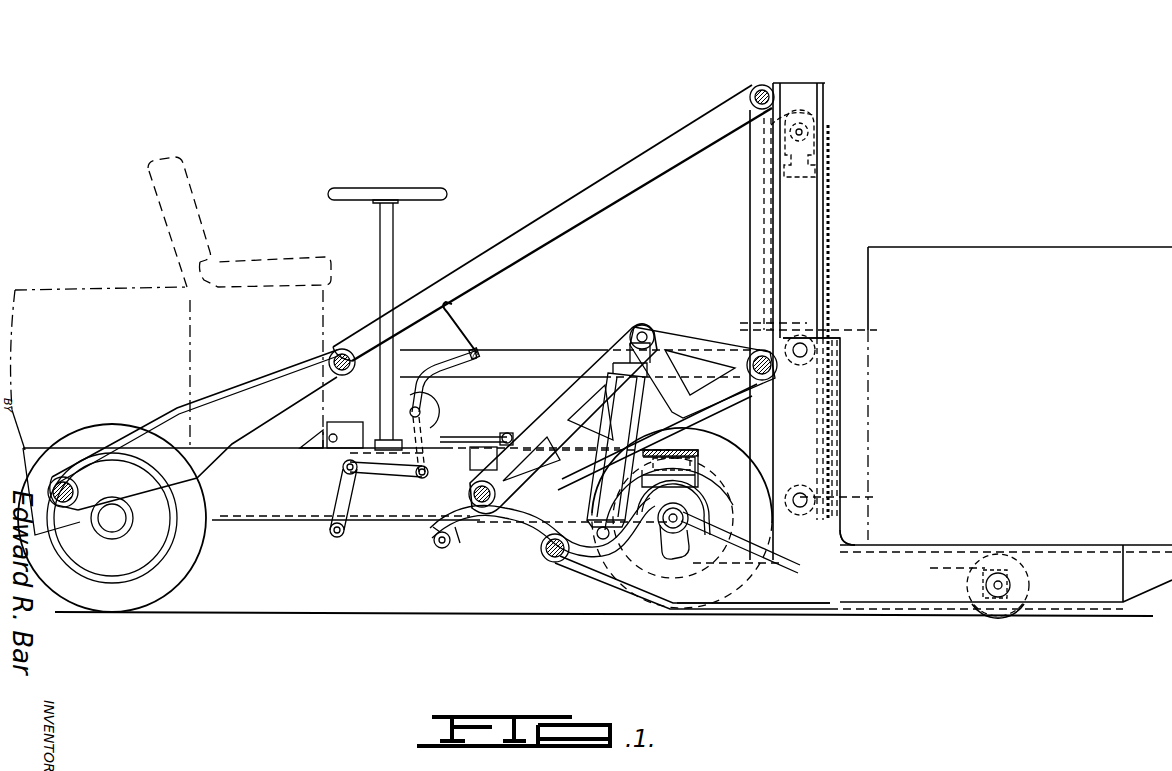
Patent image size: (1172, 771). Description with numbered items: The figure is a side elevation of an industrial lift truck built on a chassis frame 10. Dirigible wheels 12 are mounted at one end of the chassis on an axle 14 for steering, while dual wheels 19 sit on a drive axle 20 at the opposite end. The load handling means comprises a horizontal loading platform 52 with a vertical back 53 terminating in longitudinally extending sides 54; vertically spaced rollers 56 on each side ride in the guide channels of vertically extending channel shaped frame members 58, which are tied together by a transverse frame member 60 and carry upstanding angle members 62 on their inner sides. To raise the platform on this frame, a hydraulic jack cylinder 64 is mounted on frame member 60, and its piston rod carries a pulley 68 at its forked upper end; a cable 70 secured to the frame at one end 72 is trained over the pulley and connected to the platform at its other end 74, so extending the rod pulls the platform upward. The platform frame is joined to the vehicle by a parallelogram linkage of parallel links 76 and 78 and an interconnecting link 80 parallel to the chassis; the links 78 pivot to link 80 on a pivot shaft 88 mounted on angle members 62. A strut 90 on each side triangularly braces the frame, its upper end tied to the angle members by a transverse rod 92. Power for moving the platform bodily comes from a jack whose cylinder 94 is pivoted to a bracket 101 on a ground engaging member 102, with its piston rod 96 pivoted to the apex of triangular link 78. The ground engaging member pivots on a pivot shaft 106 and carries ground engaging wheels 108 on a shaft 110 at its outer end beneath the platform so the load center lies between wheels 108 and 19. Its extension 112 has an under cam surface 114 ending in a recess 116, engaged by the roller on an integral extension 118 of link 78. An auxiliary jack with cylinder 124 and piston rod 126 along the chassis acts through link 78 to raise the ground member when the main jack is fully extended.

The chassis frame 10 is at (257, 527).
The dirigible wheels 12 is at (180, 570).
The axle 14 is at (118, 525).
The dual wheels 19 is at (640, 604).
The drive axle 20 is at (690, 514).
The loading platform 52 is at (970, 546).
The vertical back 53 is at (840, 482).
The sides 54 is at (838, 445).
The rollers 56 is at (808, 342).
The channel shaped frame members 58 is at (800, 90).
The transverse frame member 60 is at (832, 335).
The upstanding angle members 62 is at (752, 213).
The cylinder 64 is at (815, 192).
The pulley 68 is at (816, 120).
The cable 70 is at (836, 216).
The cable end connection 72 is at (745, 330).
The cable end connection 74 is at (906, 546).
The link 76 is at (249, 390).
The link 78 is at (600, 348).
The interconnecting link 80 is at (508, 345).
The pivot shaft 88 is at (776, 375).
The strut 90 is at (552, 216).
The transverse rod 92 is at (770, 84).
The cylinder 94 is at (706, 398).
The piston rod 96 is at (649, 326).
The bracket 101 is at (574, 520).
The ground engaging member 102 is at (758, 595).
The pivot shaft 106 is at (552, 563).
The ground engaging wheels 108 is at (1000, 605).
The shaft 110 is at (684, 560).
The extension 112 is at (478, 542).
The cam surface 114 is at (436, 548).
The recess 116 is at (522, 540).
The extension 118 is at (425, 530).
The cylinder 124 is at (354, 422).
The piston rod 126 is at (464, 433).